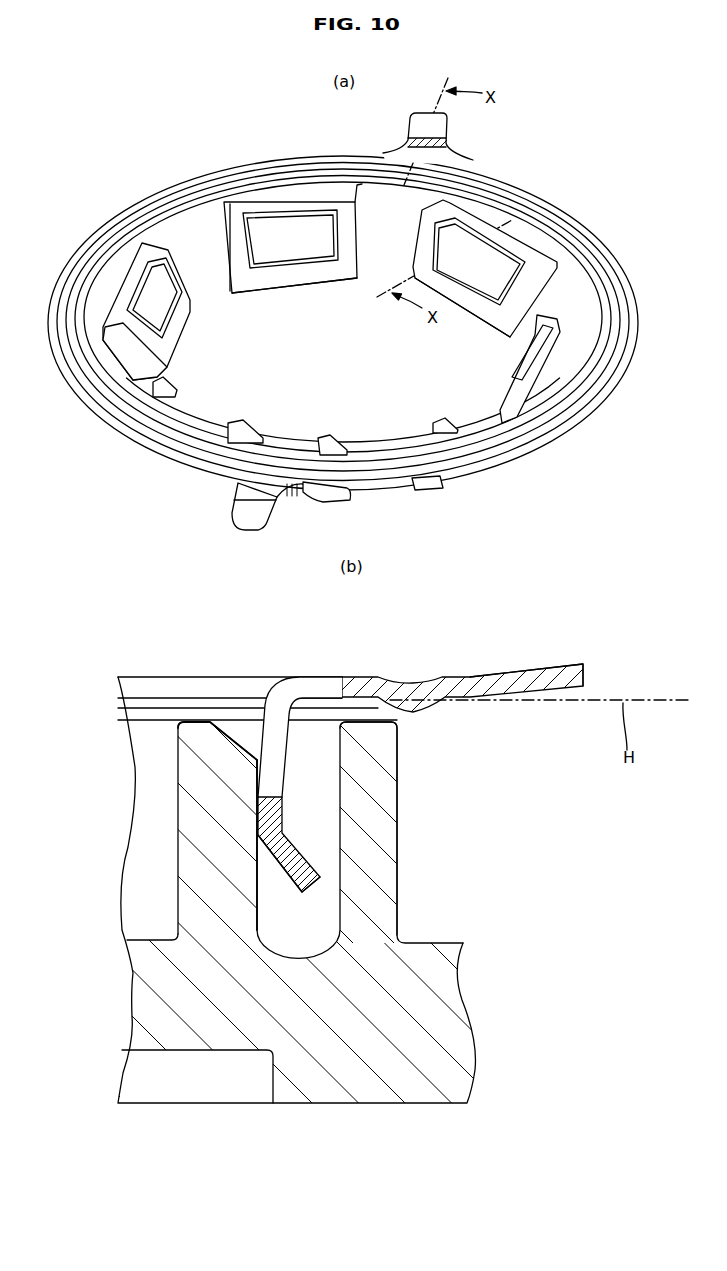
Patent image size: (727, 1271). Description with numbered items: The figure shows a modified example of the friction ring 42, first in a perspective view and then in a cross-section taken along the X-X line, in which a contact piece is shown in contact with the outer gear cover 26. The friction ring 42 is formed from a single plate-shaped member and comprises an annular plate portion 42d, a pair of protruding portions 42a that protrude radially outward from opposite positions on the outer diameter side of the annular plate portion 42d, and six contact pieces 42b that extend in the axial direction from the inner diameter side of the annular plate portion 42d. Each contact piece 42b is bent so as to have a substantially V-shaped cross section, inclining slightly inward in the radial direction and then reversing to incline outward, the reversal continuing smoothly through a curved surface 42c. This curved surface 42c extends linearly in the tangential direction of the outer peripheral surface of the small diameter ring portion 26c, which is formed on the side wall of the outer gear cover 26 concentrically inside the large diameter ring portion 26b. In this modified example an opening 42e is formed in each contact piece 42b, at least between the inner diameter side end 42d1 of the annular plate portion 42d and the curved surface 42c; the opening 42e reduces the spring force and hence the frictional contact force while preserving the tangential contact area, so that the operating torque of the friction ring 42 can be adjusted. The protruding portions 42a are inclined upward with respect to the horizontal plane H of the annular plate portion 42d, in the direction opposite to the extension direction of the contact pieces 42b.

The friction ring 42 is at (568, 190).
The protruding portion 42a is at (440, 130).
The contact piece 42b is at (190, 217).
The curved surface 42c is at (298, 274).
The annular plate portion 42d is at (95, 248).
The inner diameter side end 42d1 is at (168, 218).
The opening 42e is at (290, 230).
The outer gear cover 26 is at (478, 1033).
The large diameter ring portion 26b is at (377, 813).
The small diameter ring portion 26c is at (210, 883).